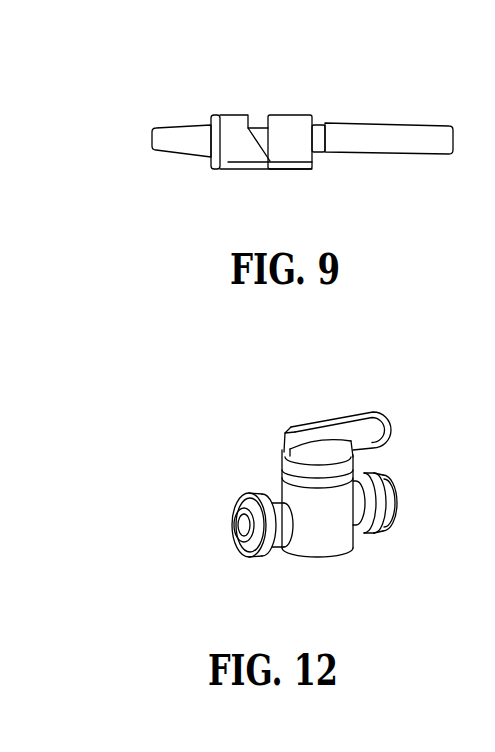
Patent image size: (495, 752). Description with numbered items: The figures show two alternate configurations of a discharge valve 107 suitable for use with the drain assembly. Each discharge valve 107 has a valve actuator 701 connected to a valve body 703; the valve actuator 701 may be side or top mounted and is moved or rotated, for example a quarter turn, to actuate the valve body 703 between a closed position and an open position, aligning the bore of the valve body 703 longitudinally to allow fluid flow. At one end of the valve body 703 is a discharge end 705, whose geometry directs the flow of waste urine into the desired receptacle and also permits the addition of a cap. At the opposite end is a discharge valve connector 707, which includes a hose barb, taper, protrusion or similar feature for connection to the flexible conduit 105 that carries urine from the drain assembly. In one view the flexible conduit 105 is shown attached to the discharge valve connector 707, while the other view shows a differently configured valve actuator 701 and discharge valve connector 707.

In FIG. 9, the discharge valve 107 is at (249, 60).
In FIG. 12, the discharge valve 107 is at (271, 404).
In FIG. 9, the flexible conduit 105 is at (403, 130).
In FIG. 9, the valve actuator 701 is at (233, 119).
In FIG. 12, the valve actuator 701 is at (334, 417).
In FIG. 9, the valve body 703 is at (291, 121).
In FIG. 12, the valve body 703 is at (337, 528).
In FIG. 9, the discharge end 705 is at (170, 127).
In FIG. 12, the discharge end 705 is at (389, 508).
In FIG. 9, the discharge valve connector 707 is at (318, 152).
In FIG. 12, the discharge valve connector 707 is at (242, 503).